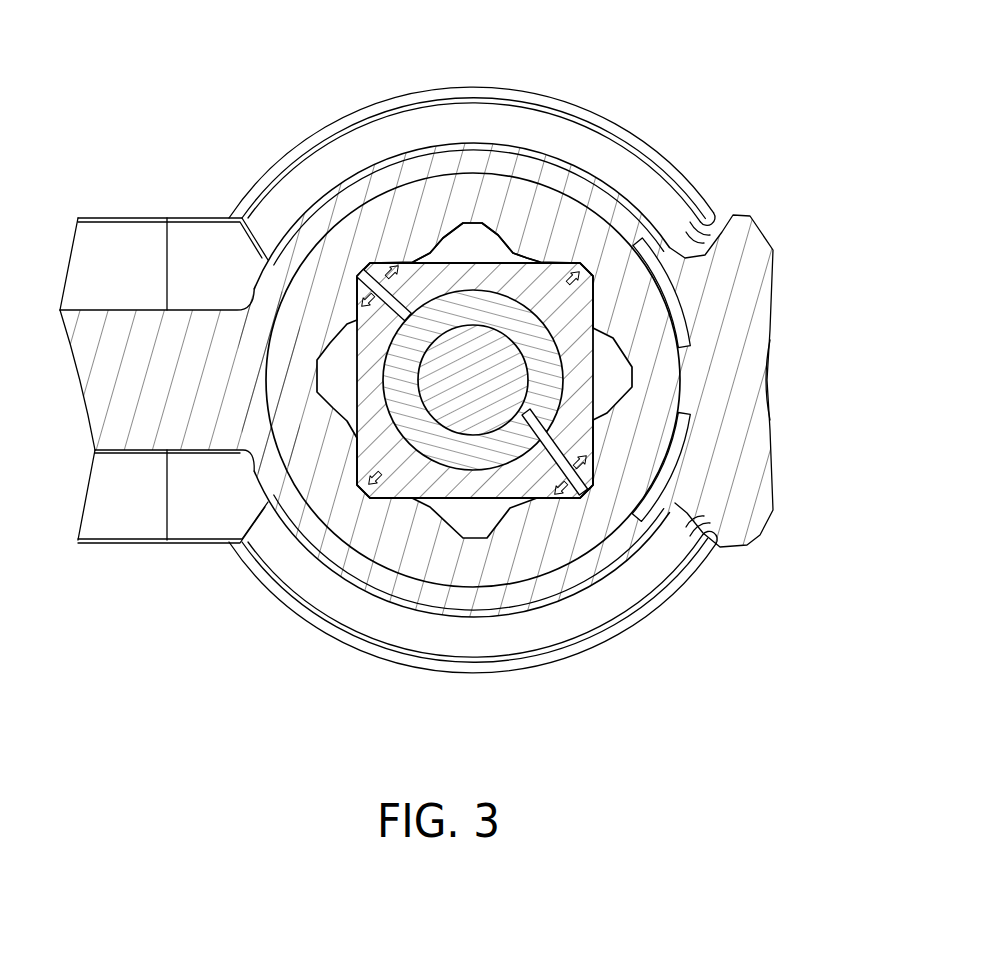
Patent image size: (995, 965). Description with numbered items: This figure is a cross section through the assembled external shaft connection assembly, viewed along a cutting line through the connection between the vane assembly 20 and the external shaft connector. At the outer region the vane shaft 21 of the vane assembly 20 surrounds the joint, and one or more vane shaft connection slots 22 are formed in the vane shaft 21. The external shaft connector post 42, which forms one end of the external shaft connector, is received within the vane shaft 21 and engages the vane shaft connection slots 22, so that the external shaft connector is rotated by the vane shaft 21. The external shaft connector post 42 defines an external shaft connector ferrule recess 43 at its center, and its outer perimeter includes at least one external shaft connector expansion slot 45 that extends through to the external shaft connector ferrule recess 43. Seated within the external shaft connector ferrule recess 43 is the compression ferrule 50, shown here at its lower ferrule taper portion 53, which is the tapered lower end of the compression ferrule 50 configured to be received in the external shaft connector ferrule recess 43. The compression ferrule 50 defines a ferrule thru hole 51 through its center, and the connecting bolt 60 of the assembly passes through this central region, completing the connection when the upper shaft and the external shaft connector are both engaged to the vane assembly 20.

The vane assembly 20 is at (122, 216).
The vane shaft 21 is at (355, 225).
The vane shaft connection slot 22 is at (475, 243).
The external shaft connector post 42 is at (544, 275).
The external shaft connector ferrule recess 43 is at (560, 356).
The external shaft connector expansion slot 45 is at (365, 272).
The compression ferrule 50 is at (435, 452).
The ferrule thru hole 51 is at (537, 410).
The lower ferrule taper portion 53 is at (480, 472).
The connecting bolt 60 is at (462, 357).